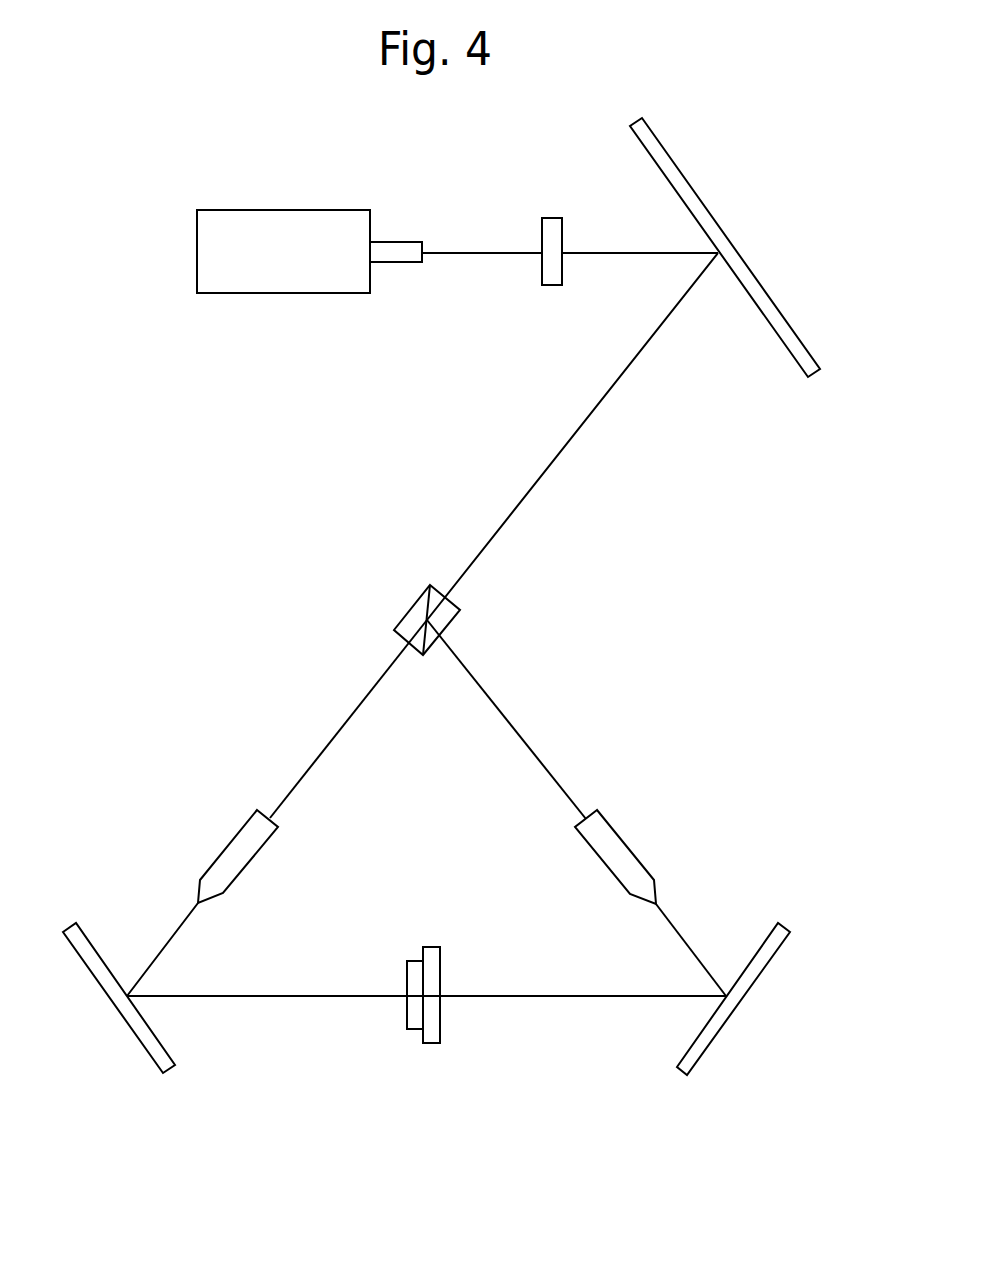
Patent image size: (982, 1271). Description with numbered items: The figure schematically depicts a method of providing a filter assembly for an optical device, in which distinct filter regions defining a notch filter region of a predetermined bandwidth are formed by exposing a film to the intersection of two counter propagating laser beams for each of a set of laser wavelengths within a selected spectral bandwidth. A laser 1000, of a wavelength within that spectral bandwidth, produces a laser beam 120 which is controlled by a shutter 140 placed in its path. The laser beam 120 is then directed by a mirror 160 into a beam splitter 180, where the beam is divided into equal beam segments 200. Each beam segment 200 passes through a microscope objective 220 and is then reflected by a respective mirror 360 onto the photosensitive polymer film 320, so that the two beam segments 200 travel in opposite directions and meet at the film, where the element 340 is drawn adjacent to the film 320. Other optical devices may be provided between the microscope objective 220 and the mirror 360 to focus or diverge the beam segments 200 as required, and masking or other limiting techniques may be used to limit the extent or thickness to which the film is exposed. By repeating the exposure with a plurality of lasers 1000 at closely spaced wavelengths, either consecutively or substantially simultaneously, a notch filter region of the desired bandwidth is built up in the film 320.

The laser 1000 is at (252, 210).
The laser beam 120 is at (621, 252).
The shutter 140 is at (551, 218).
The mirror 160 is at (689, 181).
The beam splitter 180 is at (403, 613).
The beam segment 200 is at (312, 752).
The microscope objective 220 is at (222, 848).
The photosensitive polymer film 320 is at (407, 1018).
The optical element 340 is at (441, 1022).
The mirror 360 is at (133, 1036).